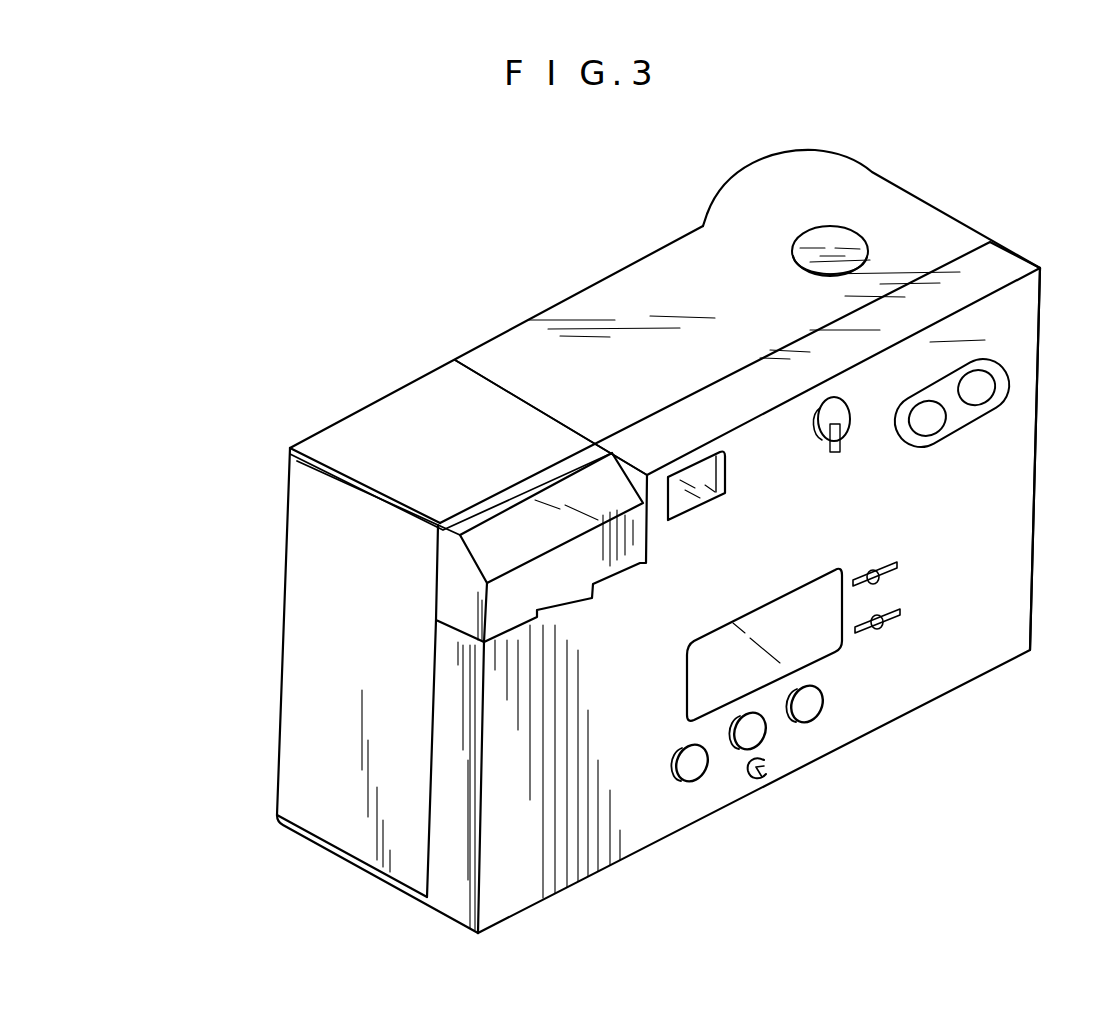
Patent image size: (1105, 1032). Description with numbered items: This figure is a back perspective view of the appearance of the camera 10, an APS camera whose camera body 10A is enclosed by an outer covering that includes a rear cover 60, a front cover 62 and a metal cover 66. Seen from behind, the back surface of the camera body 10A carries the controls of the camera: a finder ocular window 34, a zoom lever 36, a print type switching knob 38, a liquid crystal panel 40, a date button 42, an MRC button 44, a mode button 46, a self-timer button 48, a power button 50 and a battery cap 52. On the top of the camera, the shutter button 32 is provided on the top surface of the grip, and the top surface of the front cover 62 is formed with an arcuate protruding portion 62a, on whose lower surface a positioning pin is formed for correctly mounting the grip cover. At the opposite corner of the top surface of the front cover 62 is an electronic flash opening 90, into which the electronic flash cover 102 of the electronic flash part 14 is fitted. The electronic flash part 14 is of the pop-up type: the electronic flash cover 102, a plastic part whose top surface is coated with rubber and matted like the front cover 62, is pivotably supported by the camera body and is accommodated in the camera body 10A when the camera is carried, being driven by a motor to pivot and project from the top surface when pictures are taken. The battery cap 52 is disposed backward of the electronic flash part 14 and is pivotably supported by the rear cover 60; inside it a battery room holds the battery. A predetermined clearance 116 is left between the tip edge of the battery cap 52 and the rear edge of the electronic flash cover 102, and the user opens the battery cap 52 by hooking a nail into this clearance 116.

The camera 10 is at (494, 207).
The camera body 10A is at (317, 740).
The electronic flash part 14 is at (386, 434).
The shutter button 32 is at (828, 242).
The finder ocular window 34 is at (687, 497).
The zoom lever 36 is at (947, 419).
The print type switching knob 38 is at (833, 410).
The liquid crystal panel 40 is at (707, 670).
The date button 42 is at (868, 574).
The MRC button 44 is at (879, 628).
The mode button 46 is at (702, 760).
The self-timer button 48 is at (756, 733).
The power button 50 is at (815, 697).
The battery cap 52 is at (453, 587).
The rear cover 60 is at (1006, 551).
The front cover 62 is at (640, 285).
The protruding portion 62a is at (778, 178).
The metal cover 66 is at (313, 583).
The electronic flash opening 90 is at (525, 405).
The electronic flash cover 102 is at (447, 427).
The clearance 116 is at (497, 486).